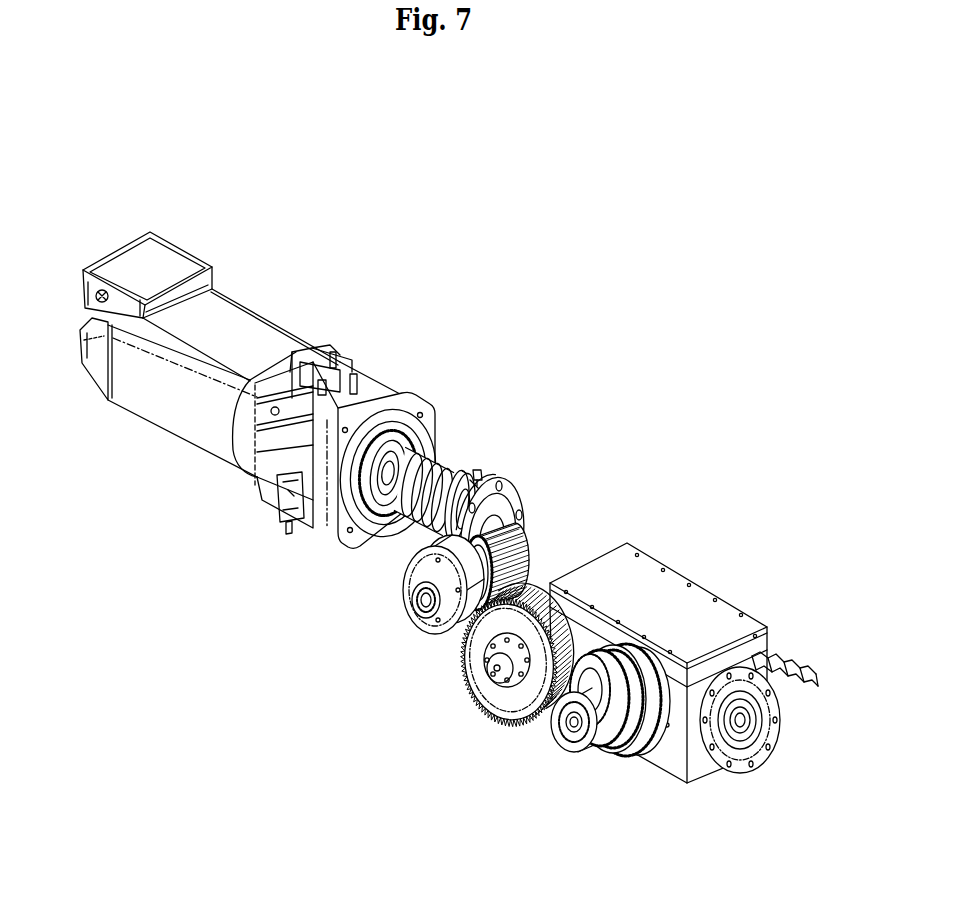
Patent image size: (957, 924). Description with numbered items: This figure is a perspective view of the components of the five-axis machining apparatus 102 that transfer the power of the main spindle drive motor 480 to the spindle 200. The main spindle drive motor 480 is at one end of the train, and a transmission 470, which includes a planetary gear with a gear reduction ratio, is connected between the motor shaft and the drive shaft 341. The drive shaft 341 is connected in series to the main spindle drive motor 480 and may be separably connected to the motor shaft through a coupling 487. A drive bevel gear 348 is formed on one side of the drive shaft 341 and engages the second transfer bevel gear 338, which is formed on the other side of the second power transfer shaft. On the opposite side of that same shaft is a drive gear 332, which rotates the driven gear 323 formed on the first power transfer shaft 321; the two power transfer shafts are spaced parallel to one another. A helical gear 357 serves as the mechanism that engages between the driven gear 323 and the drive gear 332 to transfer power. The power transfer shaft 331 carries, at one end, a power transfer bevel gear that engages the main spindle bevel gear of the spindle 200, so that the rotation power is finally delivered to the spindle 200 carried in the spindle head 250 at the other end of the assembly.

The five-axis machining apparatus 102 is at (460, 470).
The main spindle drive motor 480 is at (264, 383).
The transmission 470 is at (362, 368).
The coupling 487 is at (418, 443).
The drive shaft 341 is at (450, 468).
The drive bevel gear 348 is at (512, 498).
The second transfer bevel gear 338 is at (520, 548).
The drive gear 332 is at (388, 611).
The power transfer shaft 331 is at (416, 604).
The helical gear 357 is at (474, 705).
The first power transfer shaft 321 is at (553, 740).
The driven gear 323 is at (603, 733).
The spindle head 250 is at (695, 645).
The spindle 200 is at (752, 728).